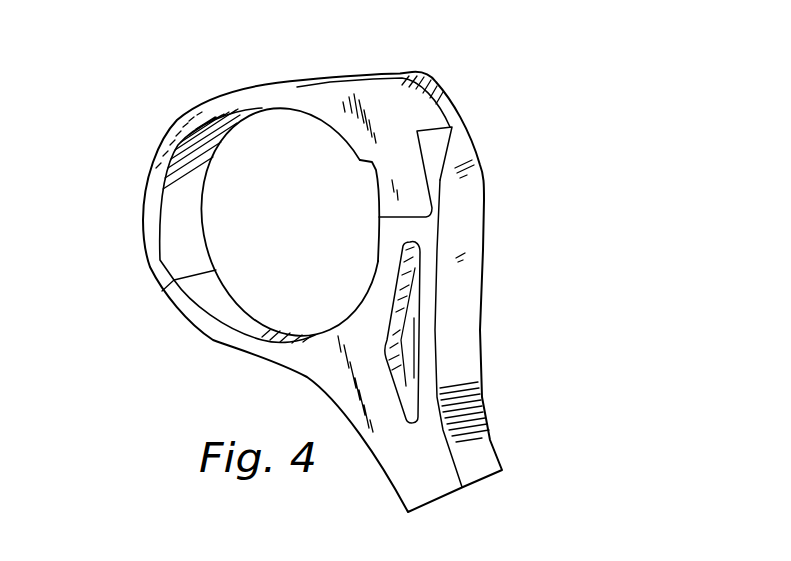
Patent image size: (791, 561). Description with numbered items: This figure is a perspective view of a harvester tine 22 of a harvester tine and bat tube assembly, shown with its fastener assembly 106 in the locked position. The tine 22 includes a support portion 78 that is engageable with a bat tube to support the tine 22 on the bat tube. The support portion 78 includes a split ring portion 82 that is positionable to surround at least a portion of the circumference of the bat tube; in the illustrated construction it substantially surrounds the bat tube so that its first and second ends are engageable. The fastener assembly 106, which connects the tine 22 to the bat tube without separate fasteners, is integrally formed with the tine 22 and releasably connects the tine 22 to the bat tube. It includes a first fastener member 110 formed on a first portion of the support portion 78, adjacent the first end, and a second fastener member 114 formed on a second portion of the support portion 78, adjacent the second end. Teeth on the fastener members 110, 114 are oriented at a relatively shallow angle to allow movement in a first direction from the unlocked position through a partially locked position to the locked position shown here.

The harvester tine 22 is at (207, 349).
The support portion 78 is at (120, 207).
The split ring portion 82 is at (178, 101).
The fastener assembly 106 is at (512, 98).
The first fastener member 110 is at (470, 57).
The second fastener member 114 is at (538, 157).